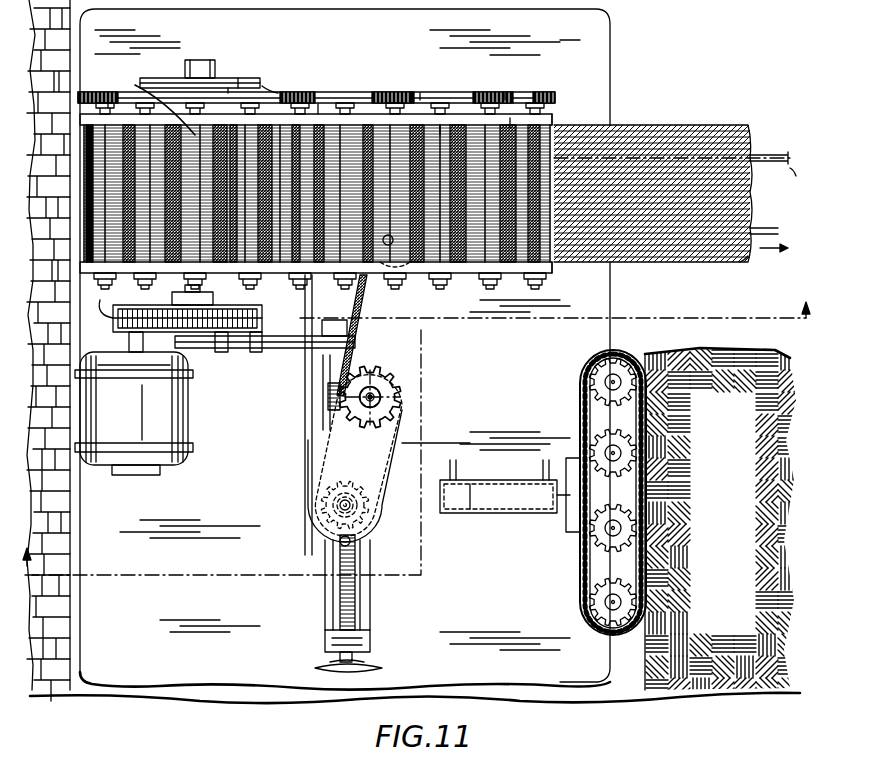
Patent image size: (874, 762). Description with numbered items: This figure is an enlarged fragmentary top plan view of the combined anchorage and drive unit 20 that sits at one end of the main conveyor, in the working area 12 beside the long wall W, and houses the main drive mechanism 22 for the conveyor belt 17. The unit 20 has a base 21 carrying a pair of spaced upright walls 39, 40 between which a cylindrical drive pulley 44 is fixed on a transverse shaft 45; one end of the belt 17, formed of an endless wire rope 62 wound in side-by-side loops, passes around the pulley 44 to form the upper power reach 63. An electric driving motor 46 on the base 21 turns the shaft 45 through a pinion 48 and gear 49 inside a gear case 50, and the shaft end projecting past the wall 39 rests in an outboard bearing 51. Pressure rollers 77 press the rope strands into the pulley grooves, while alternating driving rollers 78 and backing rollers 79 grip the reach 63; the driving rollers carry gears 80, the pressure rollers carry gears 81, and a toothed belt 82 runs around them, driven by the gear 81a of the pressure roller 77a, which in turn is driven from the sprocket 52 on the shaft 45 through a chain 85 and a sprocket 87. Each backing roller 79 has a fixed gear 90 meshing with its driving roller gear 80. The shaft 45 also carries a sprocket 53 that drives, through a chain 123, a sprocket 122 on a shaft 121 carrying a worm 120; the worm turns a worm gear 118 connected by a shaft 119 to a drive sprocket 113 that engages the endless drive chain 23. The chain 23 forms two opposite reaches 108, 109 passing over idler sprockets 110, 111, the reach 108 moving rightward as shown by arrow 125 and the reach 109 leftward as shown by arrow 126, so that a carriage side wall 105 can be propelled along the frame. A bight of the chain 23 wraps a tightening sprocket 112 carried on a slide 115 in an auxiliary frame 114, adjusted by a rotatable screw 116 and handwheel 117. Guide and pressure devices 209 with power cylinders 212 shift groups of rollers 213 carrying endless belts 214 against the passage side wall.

The working area 12 is at (415, 427).
The endless main belt 17 is at (456, 158).
The combined anchorage and drive unit 20 is at (612, 40).
The base 21 is at (600, 77).
The drive mechanism 22 is at (174, 300).
The endless drive chain 23 is at (318, 466).
The upright wall 39 is at (558, 116).
The upright wall 40 is at (562, 270).
The cylindrical drive pulley 44 is at (330, 112).
The transverse shaft 45 is at (214, 298).
The electric driving motor 46 is at (190, 422).
The pinion member 48 is at (101, 303).
The gear member 49 is at (262, 318).
The gear case 50 is at (128, 342).
The outboard bearing 51 is at (200, 62).
The sprocket 52 is at (266, 88).
The sprocket 53 is at (224, 352).
The wire rope 62 is at (622, 124).
The upper reach 63 is at (697, 266).
The pressure rollers 77 is at (100, 170).
The pressure roller 77a is at (154, 98).
The driving rollers 78 is at (440, 130).
The backing rollers 79 is at (510, 122).
The gears 80 is at (422, 93).
The gears 81 is at (110, 98).
The gear 81a is at (227, 90).
The toothed belt 82 is at (318, 106).
The chain 85 is at (240, 76).
The sprocket 87 is at (183, 78).
The fixed gear 90 is at (505, 93).
The side wall 105 is at (65, 617).
The reach 108 is at (765, 230).
The reach 109 is at (776, 155).
The idler sprocket 110 is at (402, 280).
The idler sprocket 111 is at (362, 235).
The tightening sprocket 112 is at (326, 482).
The drive sprocket 113 is at (371, 366).
The auxiliary frame 114 is at (335, 416).
The slide 115 is at (335, 541).
The rotatable screw 116 is at (335, 610).
The handwheel 117 is at (328, 668).
The worm gear 118 is at (400, 398).
The shaft 119 is at (371, 396).
The worm 120 is at (328, 396).
The shaft 121 is at (335, 358).
The sprocket 122 is at (345, 335).
The chain 123 is at (256, 352).
The arrow 125 is at (762, 250).
The arrow 126 is at (793, 183).
The guide and pressure devices 209 is at (588, 585).
The power cylinders 212 is at (490, 514).
The rollers 213 is at (598, 610).
The endless belts 214 is at (596, 560).
The long wall W is at (707, 348).